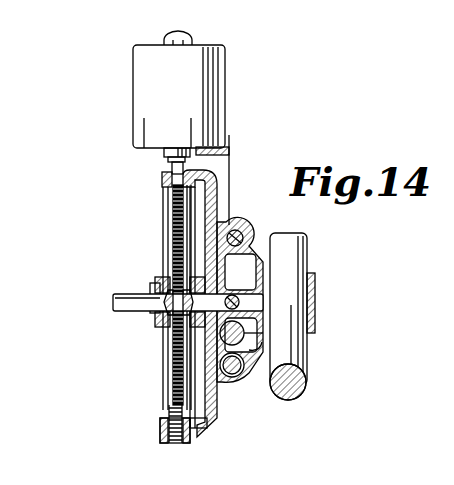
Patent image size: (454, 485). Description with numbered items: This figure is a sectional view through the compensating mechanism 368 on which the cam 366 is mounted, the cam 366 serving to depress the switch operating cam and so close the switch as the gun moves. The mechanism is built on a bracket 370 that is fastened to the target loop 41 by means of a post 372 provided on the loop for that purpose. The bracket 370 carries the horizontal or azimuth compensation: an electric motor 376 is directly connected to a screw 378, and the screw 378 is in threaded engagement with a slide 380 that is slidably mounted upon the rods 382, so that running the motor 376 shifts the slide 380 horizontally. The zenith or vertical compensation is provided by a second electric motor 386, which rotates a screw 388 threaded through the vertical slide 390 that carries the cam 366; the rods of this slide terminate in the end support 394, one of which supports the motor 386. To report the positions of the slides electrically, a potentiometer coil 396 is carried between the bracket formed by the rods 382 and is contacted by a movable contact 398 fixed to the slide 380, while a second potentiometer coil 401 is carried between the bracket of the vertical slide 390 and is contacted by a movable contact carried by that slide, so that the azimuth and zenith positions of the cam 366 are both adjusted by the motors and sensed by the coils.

The electric motor 386 is at (208, 80).
The vertical slide 390 is at (229, 153).
The potentiometer coil 401 is at (170, 200).
The screw 388 is at (176, 214).
The slide 380 is at (218, 203).
The rods 382 is at (246, 230).
The cam 366 is at (135, 304).
The compensating mechanism 368 is at (146, 390).
The screw 378 is at (234, 295).
The electric motor 376 is at (303, 346).
The movable contact 398 is at (238, 376).
The potentiometer coil 396 is at (225, 408).
The post 372 is at (294, 252).
The bracket 370 is at (311, 299).
The target loop 41 is at (304, 385).
The end support 394 is at (163, 427).